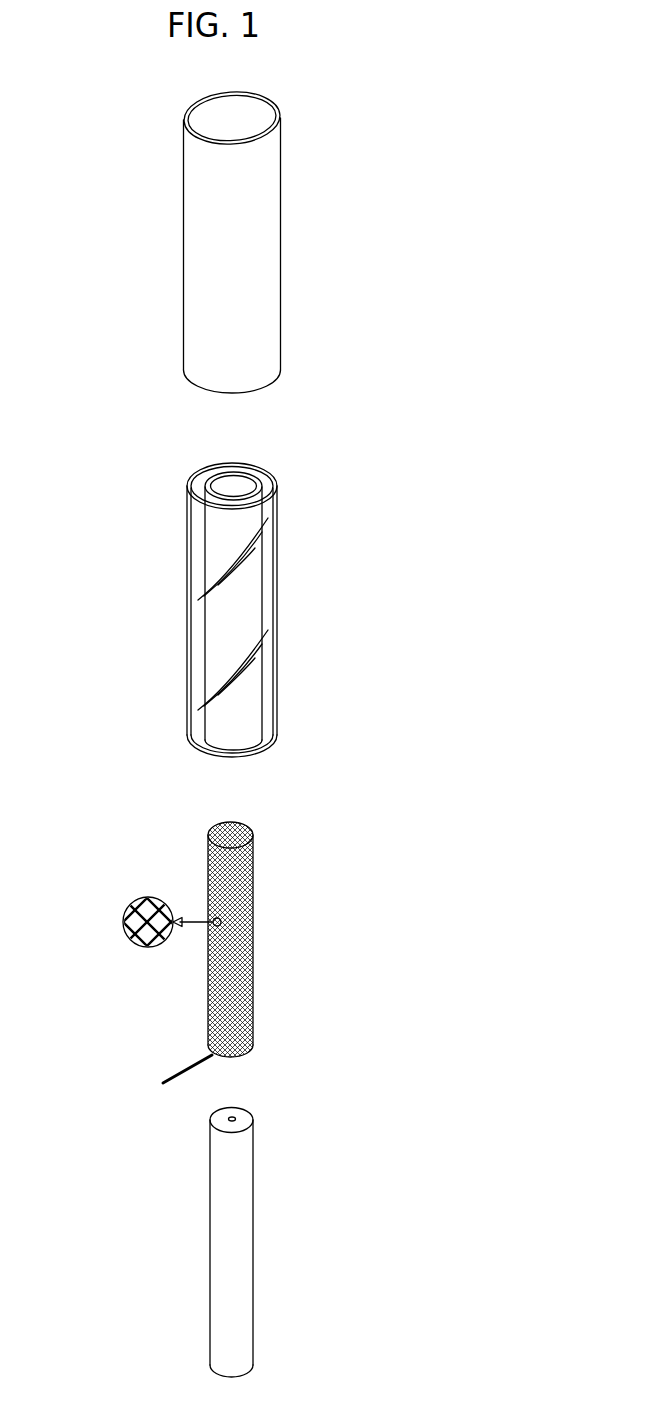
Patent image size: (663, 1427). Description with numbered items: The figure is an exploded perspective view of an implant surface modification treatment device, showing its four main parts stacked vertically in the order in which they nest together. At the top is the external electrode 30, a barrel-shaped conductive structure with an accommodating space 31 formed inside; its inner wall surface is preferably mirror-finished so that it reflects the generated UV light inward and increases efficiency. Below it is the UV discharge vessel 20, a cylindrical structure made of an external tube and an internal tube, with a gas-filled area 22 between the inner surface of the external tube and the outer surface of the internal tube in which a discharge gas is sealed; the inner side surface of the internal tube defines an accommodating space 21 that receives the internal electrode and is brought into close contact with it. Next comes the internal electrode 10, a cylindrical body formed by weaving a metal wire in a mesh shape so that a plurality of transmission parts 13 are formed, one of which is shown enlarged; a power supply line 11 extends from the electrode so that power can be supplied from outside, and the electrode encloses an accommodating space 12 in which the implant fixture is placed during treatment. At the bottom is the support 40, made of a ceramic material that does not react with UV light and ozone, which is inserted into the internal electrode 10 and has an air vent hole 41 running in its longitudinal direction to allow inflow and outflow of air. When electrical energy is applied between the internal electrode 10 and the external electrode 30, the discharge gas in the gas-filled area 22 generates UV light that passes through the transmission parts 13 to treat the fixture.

The internal electrode 10 is at (255, 912).
The power supply line 11 is at (167, 1073).
The accommodating space 12 is at (240, 840).
The transmission parts 13 is at (127, 916).
The UV discharge vessel 20 is at (277, 588).
The accommodating space 21 is at (241, 490).
The gas-filled area 22 is at (268, 556).
The external electrode 30 is at (278, 242).
The accommodating space 31 is at (254, 122).
The support 40 is at (243, 1202).
The air vent hole 41 is at (236, 1120).